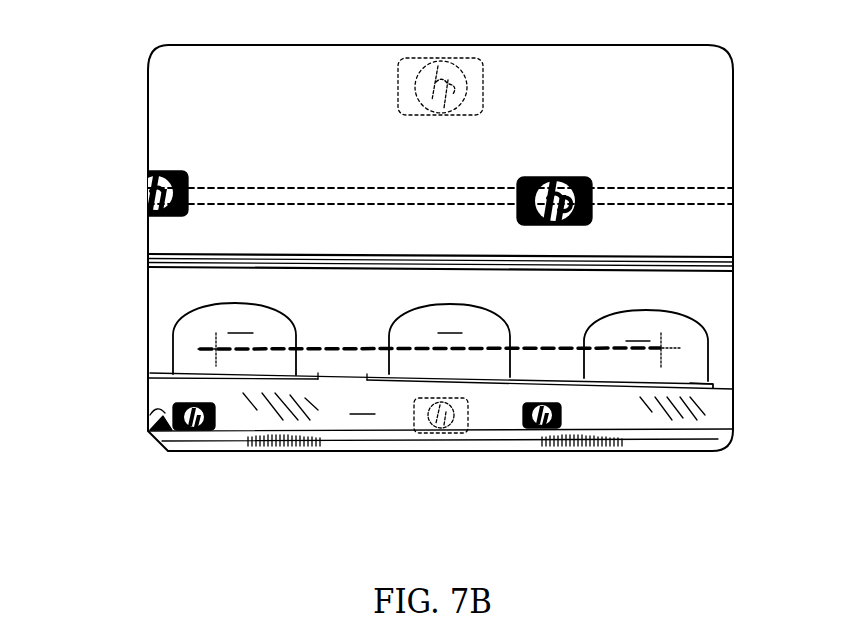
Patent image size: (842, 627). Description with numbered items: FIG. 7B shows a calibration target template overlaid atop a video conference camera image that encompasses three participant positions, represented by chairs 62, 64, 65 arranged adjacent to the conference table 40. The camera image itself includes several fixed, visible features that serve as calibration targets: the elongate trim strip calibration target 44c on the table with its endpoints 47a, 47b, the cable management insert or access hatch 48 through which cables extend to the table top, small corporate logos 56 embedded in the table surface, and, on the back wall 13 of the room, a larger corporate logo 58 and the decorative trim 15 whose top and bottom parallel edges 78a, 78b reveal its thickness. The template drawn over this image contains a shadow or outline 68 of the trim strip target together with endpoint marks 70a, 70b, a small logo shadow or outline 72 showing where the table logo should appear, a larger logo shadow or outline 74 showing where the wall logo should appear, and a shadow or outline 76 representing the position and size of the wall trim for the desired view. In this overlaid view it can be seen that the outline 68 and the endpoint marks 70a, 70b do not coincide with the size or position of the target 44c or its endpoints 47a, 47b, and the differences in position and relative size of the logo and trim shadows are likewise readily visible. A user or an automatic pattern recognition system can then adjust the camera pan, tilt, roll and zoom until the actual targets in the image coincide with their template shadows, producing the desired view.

The back wall 13 is at (643, 67).
The larger corporate logo 58 is at (186, 172).
The larger logo shadow or outline 74 is at (478, 78).
The trim target shadow or outline 76 is at (440, 192).
The top parallel edge 78a is at (312, 186).
The bottom parallel edge 78b is at (312, 206).
The decorative trim 15 is at (402, 255).
The chair 65 is at (234, 339).
The chair 64 is at (449, 340).
The chair 62 is at (646, 345).
The shadow or outline of the target 68 is at (535, 347).
The endpoint mark 70a is at (216, 348).
The endpoint mark 70b is at (662, 348).
The trim strip calibration target 44c is at (564, 380).
The endpoint 47a is at (370, 378).
The endpoint 47b is at (718, 383).
The conference table 40 is at (440, 419).
The cable management insert or access hatch 48 is at (148, 430).
The corporate logo 56 is at (212, 430).
The small logo shadow or outline 72 is at (465, 415).